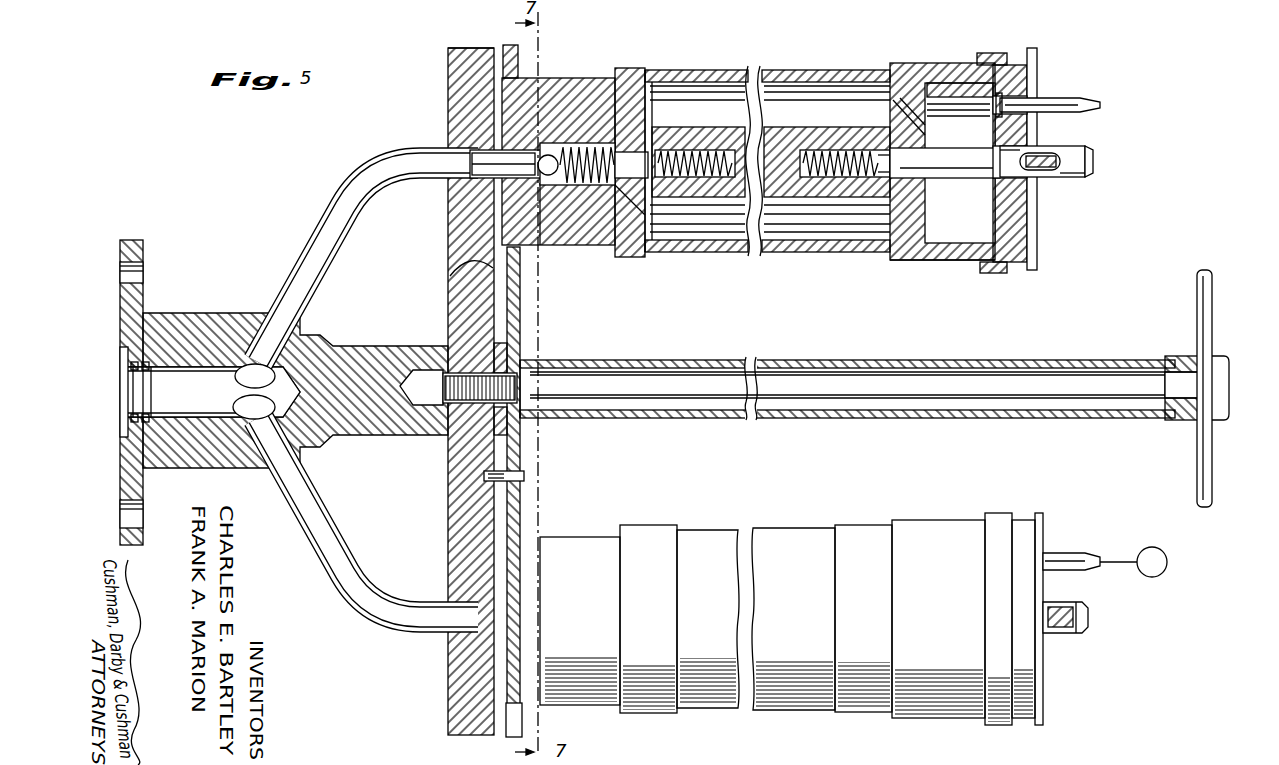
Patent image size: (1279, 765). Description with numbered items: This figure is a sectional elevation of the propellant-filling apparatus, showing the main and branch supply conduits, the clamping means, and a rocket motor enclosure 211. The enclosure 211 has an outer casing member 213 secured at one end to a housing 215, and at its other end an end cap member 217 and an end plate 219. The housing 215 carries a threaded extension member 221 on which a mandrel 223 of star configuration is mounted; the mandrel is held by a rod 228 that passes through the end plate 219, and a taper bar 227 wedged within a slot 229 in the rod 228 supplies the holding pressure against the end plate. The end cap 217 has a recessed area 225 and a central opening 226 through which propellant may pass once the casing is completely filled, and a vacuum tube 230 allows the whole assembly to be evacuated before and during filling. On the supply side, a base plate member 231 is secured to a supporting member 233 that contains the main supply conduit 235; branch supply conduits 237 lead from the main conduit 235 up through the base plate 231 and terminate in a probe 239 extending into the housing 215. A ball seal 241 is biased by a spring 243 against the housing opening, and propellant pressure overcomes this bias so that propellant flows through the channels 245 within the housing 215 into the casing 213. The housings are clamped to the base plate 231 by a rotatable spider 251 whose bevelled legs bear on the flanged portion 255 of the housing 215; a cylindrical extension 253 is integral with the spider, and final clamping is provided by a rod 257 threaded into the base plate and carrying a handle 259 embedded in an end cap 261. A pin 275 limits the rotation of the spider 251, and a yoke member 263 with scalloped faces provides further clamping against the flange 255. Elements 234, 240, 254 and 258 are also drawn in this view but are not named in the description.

The rocket motor enclosure 211 is at (945, 503).
The outer casing member 213 is at (774, 72).
The housing 215 is at (576, 96).
The end cap member 217 is at (920, 70).
The end plate 219 is at (1036, 80).
The threaded extension member 221 is at (700, 160).
The mandrel 223 is at (786, 212).
The recessed area 225 is at (966, 262).
The central opening 226 is at (885, 198).
The taper bar 227 is at (1050, 160).
The rod 228 is at (950, 180).
The slot 229 is at (1052, 180).
The vacuum tube 230 is at (1066, 94).
The base plate member 231 is at (462, 50).
The supporting member 233 is at (197, 314).
The flange 234 is at (145, 262).
The main supply conduit 235 is at (190, 420).
The branch supply conduit 237 is at (368, 163).
The probe 239 is at (512, 150).
The retainer block 240 is at (500, 47).
The ball seal 241 is at (548, 155).
The spring 243 is at (572, 186).
The channels 245 is at (612, 132).
The rotatable spider 251 is at (513, 335).
The cylindrical extension 253 is at (812, 360).
The mounting block 254 is at (456, 330).
The flanged portion 255 is at (460, 272).
The rod 257 is at (948, 386).
The nut 258 is at (1180, 358).
The handle 259 is at (1208, 298).
The end cap 261 is at (1226, 420).
The yoke member 263 is at (506, 735).
The pin 275 is at (522, 478).